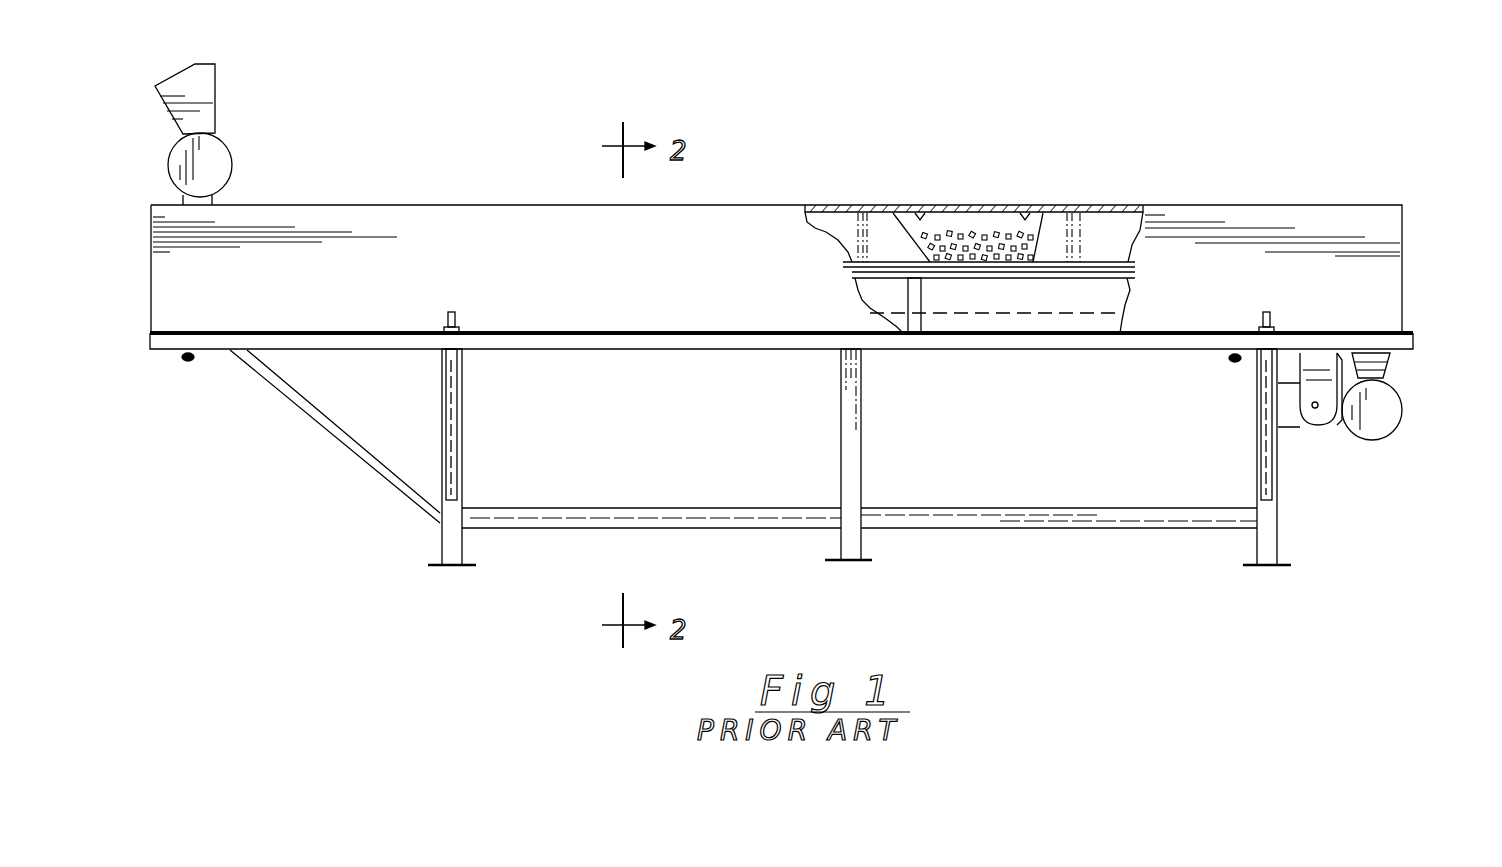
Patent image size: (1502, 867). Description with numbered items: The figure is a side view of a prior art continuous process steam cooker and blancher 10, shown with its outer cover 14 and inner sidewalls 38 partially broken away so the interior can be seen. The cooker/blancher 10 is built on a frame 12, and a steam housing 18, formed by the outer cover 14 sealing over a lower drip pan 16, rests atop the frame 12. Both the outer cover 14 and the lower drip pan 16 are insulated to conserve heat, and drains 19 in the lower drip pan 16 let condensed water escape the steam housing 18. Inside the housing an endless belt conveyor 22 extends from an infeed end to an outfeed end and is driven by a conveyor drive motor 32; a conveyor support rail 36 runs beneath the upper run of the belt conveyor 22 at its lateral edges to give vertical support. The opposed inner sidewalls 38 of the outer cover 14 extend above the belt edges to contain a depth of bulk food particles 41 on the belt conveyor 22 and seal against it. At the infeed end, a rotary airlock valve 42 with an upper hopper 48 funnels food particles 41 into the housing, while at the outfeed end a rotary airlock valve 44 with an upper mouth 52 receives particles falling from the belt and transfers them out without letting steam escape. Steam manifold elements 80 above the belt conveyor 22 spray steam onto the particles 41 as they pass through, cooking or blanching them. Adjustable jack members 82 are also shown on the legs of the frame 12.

The continuous process steam cooker and blancher 10 is at (943, 98).
The frame 12 is at (870, 455).
The outer cover 14 is at (526, 266).
The lower drip pan 16 is at (1390, 344).
The steam housing 18 is at (845, 222).
The drains 19 is at (190, 365).
The endless belt conveyor 22 is at (990, 278).
The conveyor drive motor 32 is at (1288, 425).
The conveyor support rail 36 is at (1120, 277).
The inner sidewalls 38 is at (838, 237).
The bulk food particles 41 is at (1028, 230).
The infeed rotary airlock valve 42 is at (220, 162).
The outfeed rotary airlock valve 44 is at (1380, 420).
The upper hopper 48 is at (200, 87).
The upper mouth 52 is at (1385, 366).
The steam manifold elements 80 is at (926, 207).
The adjustable leg jacks 82 is at (455, 432).